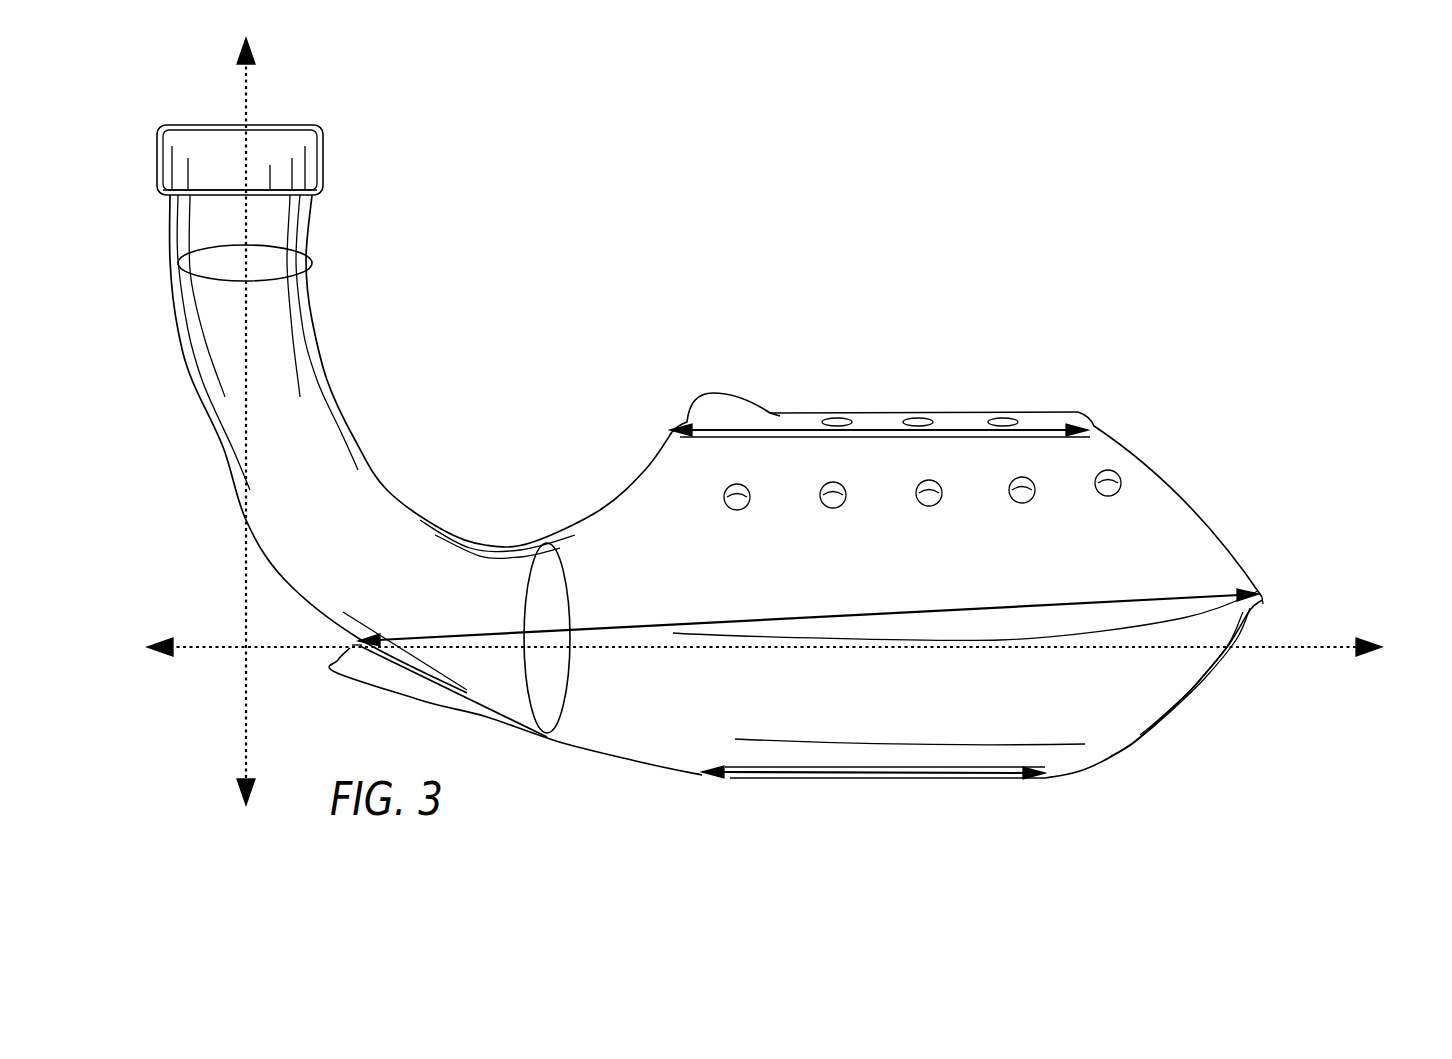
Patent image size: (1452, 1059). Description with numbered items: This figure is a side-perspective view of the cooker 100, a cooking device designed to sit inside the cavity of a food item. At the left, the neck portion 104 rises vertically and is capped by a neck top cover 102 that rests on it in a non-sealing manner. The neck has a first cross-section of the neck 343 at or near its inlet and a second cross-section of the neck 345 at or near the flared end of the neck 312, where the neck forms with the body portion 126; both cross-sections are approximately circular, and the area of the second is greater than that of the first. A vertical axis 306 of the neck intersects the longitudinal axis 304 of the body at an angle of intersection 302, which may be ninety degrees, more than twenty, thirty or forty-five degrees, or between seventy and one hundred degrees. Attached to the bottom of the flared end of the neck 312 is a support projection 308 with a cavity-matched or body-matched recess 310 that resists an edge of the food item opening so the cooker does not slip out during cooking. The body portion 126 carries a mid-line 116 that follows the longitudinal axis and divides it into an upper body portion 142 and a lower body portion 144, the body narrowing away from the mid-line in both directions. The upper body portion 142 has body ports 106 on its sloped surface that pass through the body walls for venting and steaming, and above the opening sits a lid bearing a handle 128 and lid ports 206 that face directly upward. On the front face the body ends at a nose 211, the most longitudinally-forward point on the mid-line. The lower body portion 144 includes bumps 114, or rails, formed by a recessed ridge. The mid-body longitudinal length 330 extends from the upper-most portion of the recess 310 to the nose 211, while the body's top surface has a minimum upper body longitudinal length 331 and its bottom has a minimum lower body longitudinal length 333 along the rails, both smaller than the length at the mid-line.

The cooker 100 is at (920, 183).
The neck top cover 102 is at (314, 130).
The neck portion 104 is at (355, 383).
The body ports 106 is at (737, 510).
The bumps 114 is at (903, 785).
The mid-line 116 is at (1183, 618).
The body portion 126 is at (1157, 438).
The handle 128 is at (737, 395).
The upper body portion 142 is at (1025, 367).
The lower body portion 144 is at (1217, 727).
The lid ports 206 is at (837, 418).
The nose 211 is at (1262, 600).
The angle of intersection 302 is at (257, 630).
The longitudinal axis 304 is at (211, 645).
The vertical axis 306 is at (246, 727).
The support projection 308 is at (376, 700).
The recess 310 is at (340, 652).
The flared end of the neck 312 is at (453, 500).
The mid-body longitudinal length 330 is at (673, 620).
The minimum upper body longitudinal length 331 is at (1052, 427).
The minimum lower body longitudinal length 333 is at (743, 778).
The first cross-section of the neck 343 is at (313, 267).
The second cross-section of the neck 345 is at (527, 730).